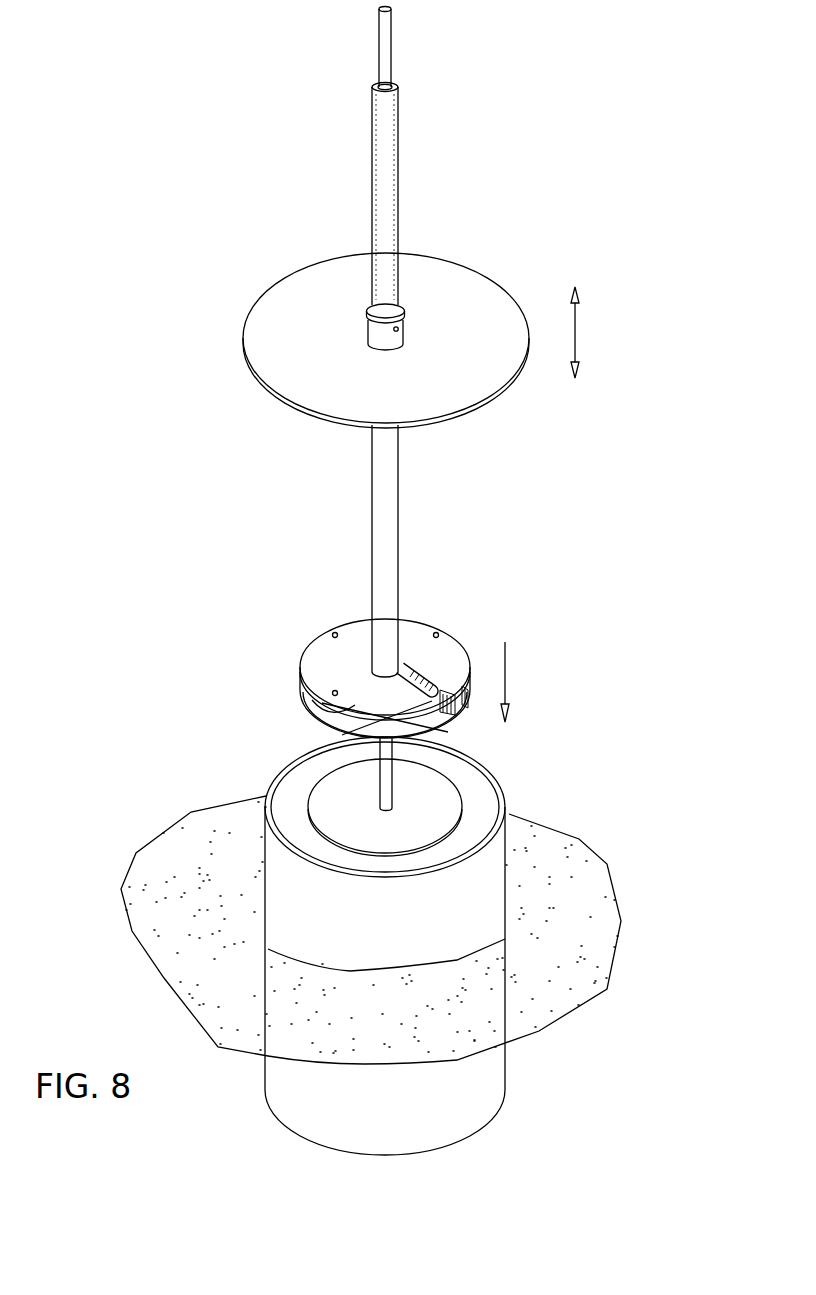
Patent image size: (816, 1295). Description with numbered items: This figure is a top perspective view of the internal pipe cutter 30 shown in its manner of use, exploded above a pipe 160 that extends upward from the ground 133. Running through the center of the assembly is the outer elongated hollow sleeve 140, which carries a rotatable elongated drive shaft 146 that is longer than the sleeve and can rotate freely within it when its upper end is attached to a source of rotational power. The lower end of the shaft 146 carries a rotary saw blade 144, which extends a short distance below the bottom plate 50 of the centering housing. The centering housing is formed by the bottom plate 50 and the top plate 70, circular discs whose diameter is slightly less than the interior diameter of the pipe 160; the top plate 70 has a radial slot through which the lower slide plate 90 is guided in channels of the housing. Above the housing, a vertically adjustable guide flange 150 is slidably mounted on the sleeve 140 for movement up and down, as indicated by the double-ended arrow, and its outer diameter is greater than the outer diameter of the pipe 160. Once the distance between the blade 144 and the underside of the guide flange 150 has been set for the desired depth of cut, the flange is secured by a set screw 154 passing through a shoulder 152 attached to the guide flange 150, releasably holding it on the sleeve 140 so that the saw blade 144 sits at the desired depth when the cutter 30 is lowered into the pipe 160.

The internal pipe cutter 30 is at (198, 558).
The bottom plate 50 is at (358, 723).
The top plate 70 is at (362, 642).
The lower slide plate 90 is at (411, 678).
The ground 133 is at (575, 958).
The hollow sleeve 140 is at (386, 176).
The rotary saw blade 144 is at (412, 803).
The drive shaft 146 is at (380, 38).
The guide flange 150 is at (276, 334).
The shoulder 152 is at (375, 329).
The set screw 154 is at (400, 330).
The pipe 160 is at (430, 896).